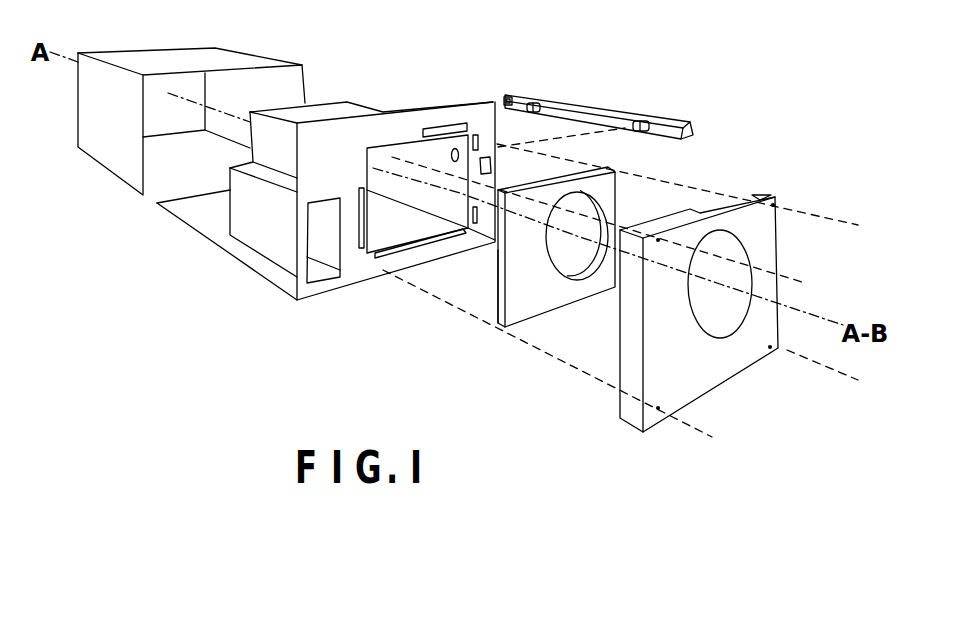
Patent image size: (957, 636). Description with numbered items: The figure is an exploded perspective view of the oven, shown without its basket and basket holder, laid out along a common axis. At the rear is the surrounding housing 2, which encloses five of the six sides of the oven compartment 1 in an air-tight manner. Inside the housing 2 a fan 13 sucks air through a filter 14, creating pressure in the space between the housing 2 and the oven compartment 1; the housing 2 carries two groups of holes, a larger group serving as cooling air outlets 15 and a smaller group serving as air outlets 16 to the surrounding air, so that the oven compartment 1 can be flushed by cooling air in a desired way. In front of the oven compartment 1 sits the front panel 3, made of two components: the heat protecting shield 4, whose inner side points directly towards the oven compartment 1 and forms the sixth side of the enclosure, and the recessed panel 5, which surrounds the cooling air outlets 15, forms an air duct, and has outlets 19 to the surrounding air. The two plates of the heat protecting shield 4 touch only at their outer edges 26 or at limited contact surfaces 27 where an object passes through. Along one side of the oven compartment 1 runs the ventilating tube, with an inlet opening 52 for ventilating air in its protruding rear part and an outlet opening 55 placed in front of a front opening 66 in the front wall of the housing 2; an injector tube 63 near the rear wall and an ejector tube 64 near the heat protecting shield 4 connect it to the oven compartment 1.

The oven compartment 1 is at (404, 189).
The housing 2 is at (143, 196).
The front panel 3 is at (608, 310).
The heat protecting shield 4 is at (569, 260).
The recessed panel 5 is at (697, 300).
The fan 13 is at (236, 240).
The filter 14 is at (317, 284).
The cooling air outlets 15 is at (362, 249).
The air outlets 16 is at (433, 128).
The outlets 19 is at (733, 203).
The outer edges 26 is at (497, 273).
The contact surfaces 27 is at (607, 215).
The inlet opening 52 is at (506, 97).
The outlet opening 55 is at (612, 87).
The injector tube 63 is at (541, 107).
The ejector tube 64 is at (641, 122).
The front opening 66 is at (487, 157).